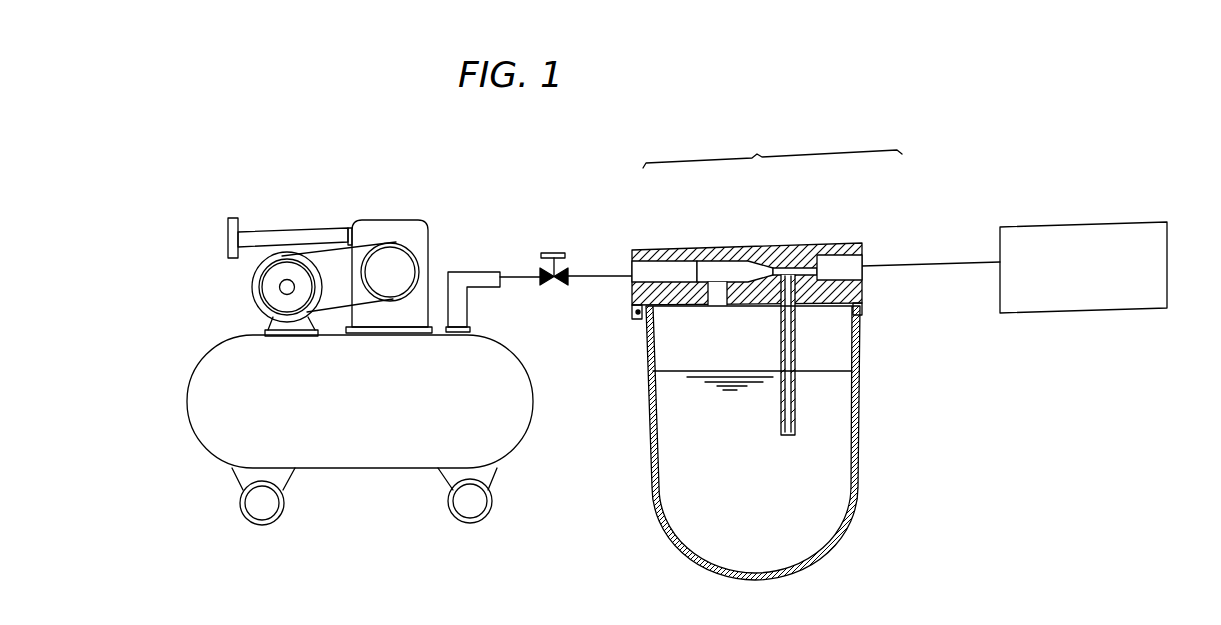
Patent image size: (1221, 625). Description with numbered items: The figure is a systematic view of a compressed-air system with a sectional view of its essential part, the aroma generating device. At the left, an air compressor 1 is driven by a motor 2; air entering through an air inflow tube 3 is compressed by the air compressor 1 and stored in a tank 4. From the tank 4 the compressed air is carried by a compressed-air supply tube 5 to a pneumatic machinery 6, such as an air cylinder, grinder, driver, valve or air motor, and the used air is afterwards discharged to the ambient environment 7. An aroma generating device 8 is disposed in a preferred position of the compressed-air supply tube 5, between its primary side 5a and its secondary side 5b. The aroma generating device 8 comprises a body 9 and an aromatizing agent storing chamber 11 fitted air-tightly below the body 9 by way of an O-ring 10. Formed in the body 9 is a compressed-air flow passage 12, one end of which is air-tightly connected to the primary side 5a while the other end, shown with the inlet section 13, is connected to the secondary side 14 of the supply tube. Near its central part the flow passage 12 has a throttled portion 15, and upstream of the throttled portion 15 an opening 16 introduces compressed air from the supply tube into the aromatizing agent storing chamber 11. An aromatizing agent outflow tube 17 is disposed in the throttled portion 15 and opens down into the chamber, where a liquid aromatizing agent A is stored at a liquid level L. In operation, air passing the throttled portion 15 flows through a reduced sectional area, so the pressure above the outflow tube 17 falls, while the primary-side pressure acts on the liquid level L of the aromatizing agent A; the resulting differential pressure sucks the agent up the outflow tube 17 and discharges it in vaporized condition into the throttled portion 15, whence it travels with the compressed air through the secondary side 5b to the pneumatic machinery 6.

The air compressor 1 is at (427, 247).
The motor 2 is at (254, 298).
The air inflow tube 3 is at (292, 232).
The tank 4 is at (382, 455).
The compressed-air supply tube 5 is at (772, 145).
The primary side of the compressed-air supply tube 5a is at (600, 274).
The secondary side of the compressed-air supply tube 5b is at (915, 263).
The pneumatic machinery 6 is at (1117, 232).
The ambient environment 7 is at (1092, 163).
The aroma generating device 8 is at (781, 388).
The body 9 is at (740, 291).
The O-ring 10 is at (632, 318).
The aromatizing agent storing chamber 11 is at (858, 423).
The compressed-air flow passage 12 is at (728, 272).
The inlet passage 13 is at (642, 265).
The secondary side of the compressed-air supply tube 14 is at (847, 262).
The throttled portion 15 is at (787, 268).
The opening 16 is at (718, 303).
The aromatizing agent outflow tube 17 is at (795, 352).
The liquid level L is at (740, 368).
The liquid aromatizing agent A is at (693, 438).